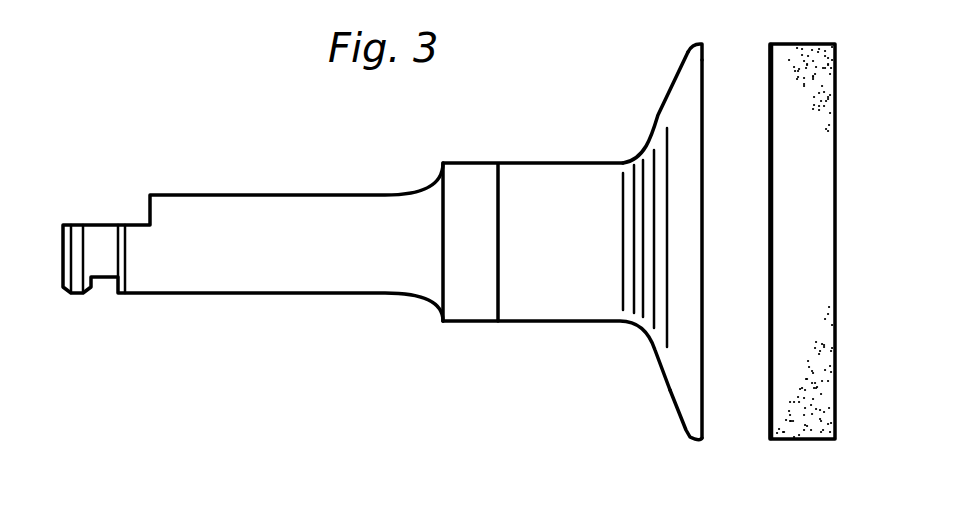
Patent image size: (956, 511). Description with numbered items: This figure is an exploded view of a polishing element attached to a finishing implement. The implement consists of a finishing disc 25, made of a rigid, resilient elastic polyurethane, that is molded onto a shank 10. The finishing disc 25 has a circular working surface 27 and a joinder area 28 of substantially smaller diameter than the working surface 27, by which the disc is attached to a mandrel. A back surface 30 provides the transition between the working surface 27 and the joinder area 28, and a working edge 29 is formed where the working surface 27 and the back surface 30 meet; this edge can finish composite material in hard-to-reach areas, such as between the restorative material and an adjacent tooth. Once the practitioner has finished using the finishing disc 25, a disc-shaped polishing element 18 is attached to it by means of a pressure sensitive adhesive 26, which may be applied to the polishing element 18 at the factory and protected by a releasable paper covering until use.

The shank 10 is at (278, 218).
The polishing element 18 is at (815, 43).
The finishing disc 25 is at (588, 164).
The pressure sensitive adhesive 26 is at (770, 93).
The working surface 27 is at (703, 388).
The joinder area 28 is at (572, 322).
The working edge 29 is at (697, 42).
The back surface 30 is at (663, 97).